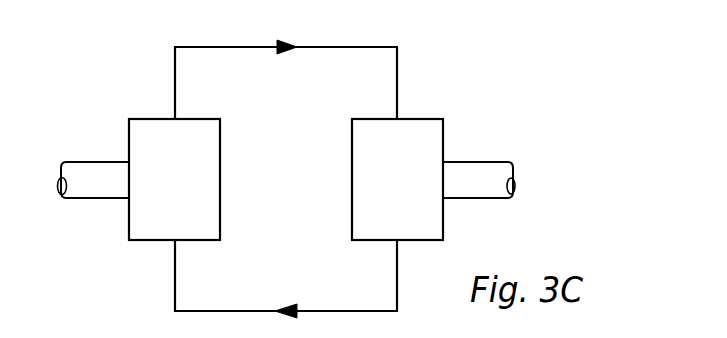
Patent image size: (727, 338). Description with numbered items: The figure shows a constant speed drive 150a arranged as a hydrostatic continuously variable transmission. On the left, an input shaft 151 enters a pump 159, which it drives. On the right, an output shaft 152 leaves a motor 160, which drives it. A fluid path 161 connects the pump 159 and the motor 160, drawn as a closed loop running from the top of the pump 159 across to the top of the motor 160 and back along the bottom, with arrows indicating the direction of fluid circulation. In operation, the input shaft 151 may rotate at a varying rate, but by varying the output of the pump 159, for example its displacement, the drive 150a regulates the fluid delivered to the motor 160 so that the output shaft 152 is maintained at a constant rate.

The constant speed drive 150a is at (121, 63).
The input shaft 151 is at (93, 198).
The output shaft 152 is at (493, 160).
The pump 159 is at (150, 242).
The motor 160 is at (423, 118).
The fluid path 161 is at (360, 46).